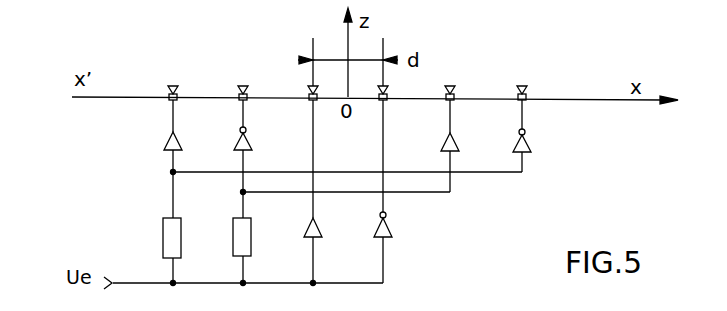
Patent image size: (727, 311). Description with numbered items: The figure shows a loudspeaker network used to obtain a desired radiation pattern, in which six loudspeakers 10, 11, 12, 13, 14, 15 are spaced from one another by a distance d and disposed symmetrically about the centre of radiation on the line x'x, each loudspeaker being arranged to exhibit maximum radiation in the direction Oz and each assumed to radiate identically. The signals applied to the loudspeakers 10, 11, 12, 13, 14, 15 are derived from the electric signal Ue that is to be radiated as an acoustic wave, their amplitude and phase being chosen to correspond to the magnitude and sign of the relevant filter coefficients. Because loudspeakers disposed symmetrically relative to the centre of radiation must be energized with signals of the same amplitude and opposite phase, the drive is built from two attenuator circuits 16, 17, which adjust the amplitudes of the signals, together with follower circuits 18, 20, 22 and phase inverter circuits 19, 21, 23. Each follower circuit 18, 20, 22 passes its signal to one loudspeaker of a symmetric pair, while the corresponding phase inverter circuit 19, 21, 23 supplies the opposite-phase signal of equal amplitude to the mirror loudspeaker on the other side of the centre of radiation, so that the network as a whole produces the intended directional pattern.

The loudspeaker 10 is at (168, 87).
The loudspeaker 11 is at (245, 86).
The loudspeaker 12 is at (311, 101).
The loudspeaker 13 is at (385, 101).
The loudspeaker 14 is at (452, 86).
The loudspeaker 15 is at (523, 86).
The attenuator circuit 16 is at (162, 238).
The attenuator circuit 17 is at (232, 238).
The follower circuit 18 is at (166, 141).
The phase inverter circuit 19 is at (237, 142).
The follower circuit 20 is at (306, 226).
The phase inverter circuit 21 is at (390, 226).
The follower circuit 22 is at (458, 142).
The phase inverter circuit 23 is at (531, 143).